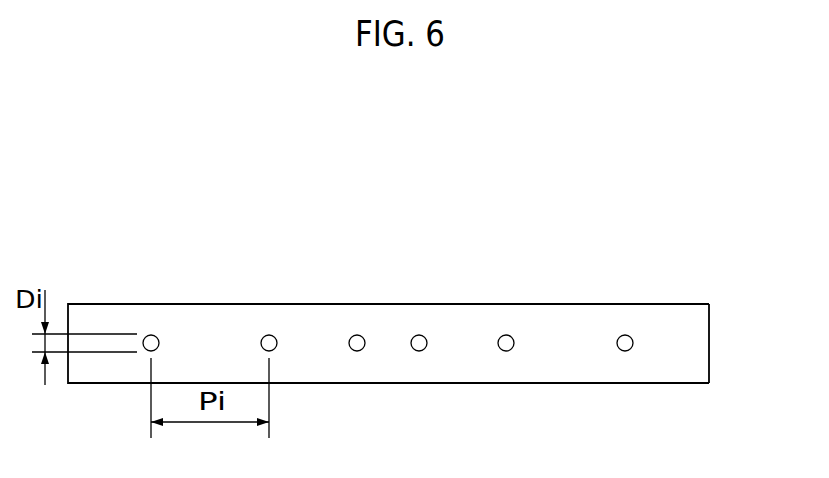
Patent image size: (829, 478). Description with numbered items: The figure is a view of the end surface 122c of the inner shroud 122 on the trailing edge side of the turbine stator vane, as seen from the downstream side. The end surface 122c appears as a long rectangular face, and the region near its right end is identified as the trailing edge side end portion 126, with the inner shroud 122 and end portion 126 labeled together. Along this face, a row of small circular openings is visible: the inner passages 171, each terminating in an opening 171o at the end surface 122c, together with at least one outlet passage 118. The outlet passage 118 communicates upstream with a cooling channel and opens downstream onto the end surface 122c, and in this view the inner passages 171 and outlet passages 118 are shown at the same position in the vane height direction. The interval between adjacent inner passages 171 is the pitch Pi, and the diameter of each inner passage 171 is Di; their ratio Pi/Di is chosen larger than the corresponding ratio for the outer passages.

The inner passage 171 is at (154, 338).
The opening of light emitting element 171o is at (151, 337).
The outlet passage 118 is at (359, 351).
The trailing edge side end portion 126 is at (424, 312).
The inner shroud 122 is at (692, 320).
The end surface 122c is at (693, 350).